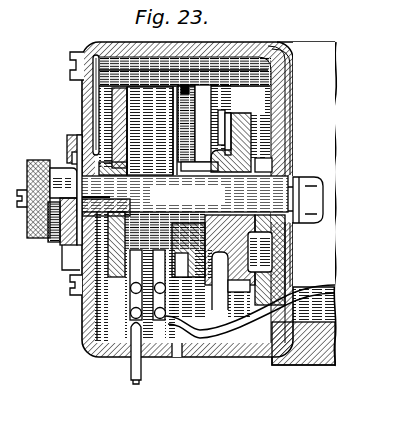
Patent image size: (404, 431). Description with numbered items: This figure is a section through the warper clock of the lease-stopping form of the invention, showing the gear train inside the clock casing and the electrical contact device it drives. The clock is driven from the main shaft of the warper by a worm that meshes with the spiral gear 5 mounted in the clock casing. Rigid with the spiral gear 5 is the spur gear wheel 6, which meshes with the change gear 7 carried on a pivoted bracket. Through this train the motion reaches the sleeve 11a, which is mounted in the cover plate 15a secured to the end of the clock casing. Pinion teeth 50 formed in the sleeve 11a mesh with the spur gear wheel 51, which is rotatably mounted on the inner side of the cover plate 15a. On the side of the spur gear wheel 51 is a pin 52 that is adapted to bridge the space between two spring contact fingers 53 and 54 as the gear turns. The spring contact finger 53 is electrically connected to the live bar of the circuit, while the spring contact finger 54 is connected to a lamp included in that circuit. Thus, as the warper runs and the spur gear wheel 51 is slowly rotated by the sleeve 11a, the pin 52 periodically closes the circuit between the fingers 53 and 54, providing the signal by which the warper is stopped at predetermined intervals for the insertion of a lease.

The cover plate 15a is at (97, 55).
The spur gear wheel 51 is at (95, 104).
The sleeve 11a is at (50, 163).
The pinion teeth 50 is at (141, 157).
The change gear 7 is at (186, 92).
The spiral gear 5 is at (246, 119).
The pin 52 is at (184, 230).
The spring contact finger 54 is at (130, 298).
The spring contact finger 53 is at (172, 300).
The spur gear wheel 6 is at (203, 262).